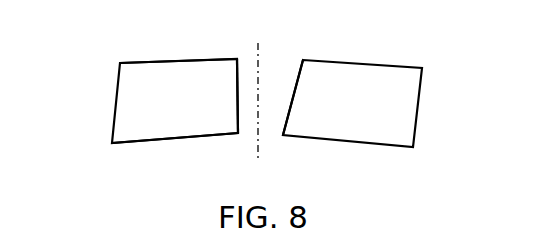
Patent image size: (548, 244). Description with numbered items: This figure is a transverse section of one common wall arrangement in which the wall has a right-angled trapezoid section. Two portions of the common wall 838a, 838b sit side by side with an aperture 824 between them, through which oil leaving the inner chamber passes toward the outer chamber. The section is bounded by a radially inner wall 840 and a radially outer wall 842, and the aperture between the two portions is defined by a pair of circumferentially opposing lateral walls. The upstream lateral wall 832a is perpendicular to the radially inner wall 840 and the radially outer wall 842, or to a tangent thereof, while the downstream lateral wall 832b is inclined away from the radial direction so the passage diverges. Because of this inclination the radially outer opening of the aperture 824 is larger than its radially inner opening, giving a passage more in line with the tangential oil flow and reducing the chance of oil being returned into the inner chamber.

The radially outer wall 842 is at (140, 62).
The aperture 824 is at (250, 78).
The downstream lateral wall 832b is at (297, 69).
The common wall portion 838a is at (203, 116).
The common wall portion 838b is at (383, 120).
The radially inner wall 840 is at (130, 143).
The upstream lateral wall 832a is at (238, 115).